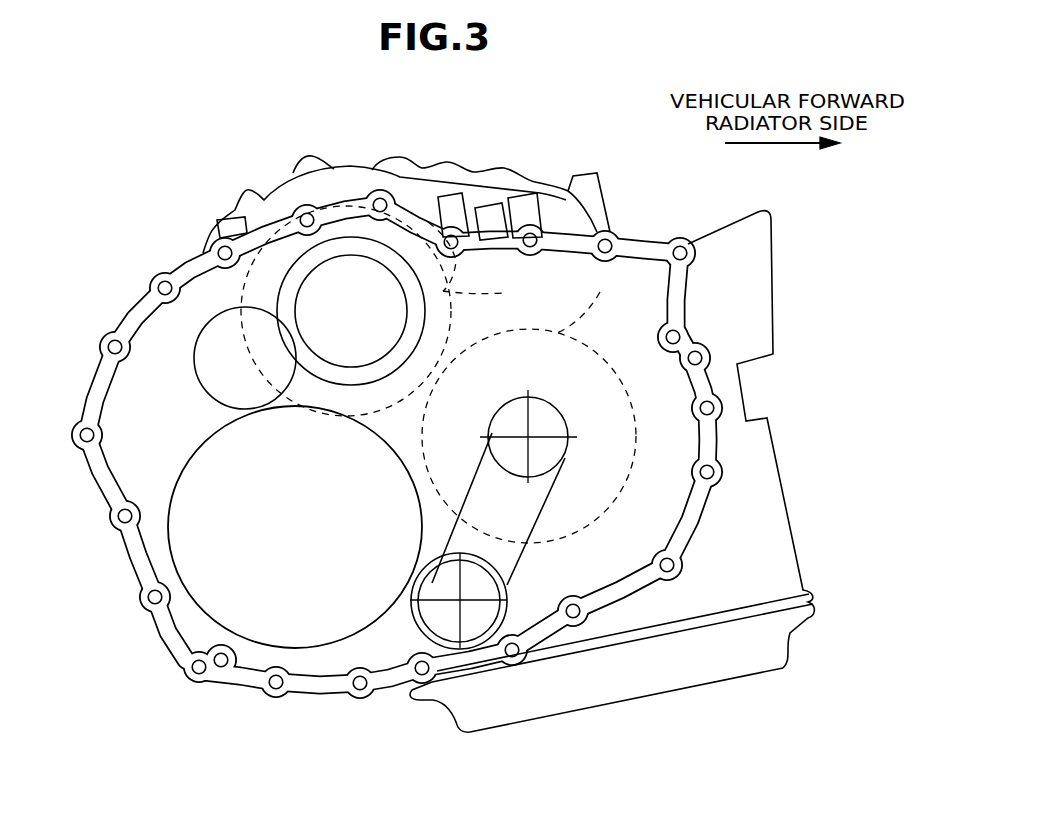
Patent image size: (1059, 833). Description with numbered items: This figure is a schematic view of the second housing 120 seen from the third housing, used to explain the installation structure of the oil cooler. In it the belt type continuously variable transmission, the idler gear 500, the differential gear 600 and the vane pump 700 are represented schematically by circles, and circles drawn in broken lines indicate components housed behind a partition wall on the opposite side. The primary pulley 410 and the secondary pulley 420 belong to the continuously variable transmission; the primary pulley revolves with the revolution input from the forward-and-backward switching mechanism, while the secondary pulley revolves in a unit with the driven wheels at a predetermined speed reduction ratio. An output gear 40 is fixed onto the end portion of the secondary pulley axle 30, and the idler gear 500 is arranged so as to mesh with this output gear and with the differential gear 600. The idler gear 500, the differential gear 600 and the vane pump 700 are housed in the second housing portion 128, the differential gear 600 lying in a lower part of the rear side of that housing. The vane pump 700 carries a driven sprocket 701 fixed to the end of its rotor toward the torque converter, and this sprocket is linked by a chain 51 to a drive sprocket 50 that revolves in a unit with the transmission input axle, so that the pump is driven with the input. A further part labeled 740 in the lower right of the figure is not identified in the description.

The second housing 120 is at (548, 182).
The second housing portion 128 is at (640, 270).
The primary pulley 410 is at (397, 444).
The secondary pulley 420 is at (514, 277).
The secondary pulley axle 30 is at (392, 282).
The output gear 40 is at (412, 333).
The drive sprocket 50 is at (547, 410).
The chain 51 is at (547, 507).
The idler gear 500 is at (207, 367).
The differential gear 600 is at (188, 479).
The vane pump 700 is at (472, 643).
The driven sprocket 701 is at (485, 586).
The oil pan flange 740 is at (722, 668).